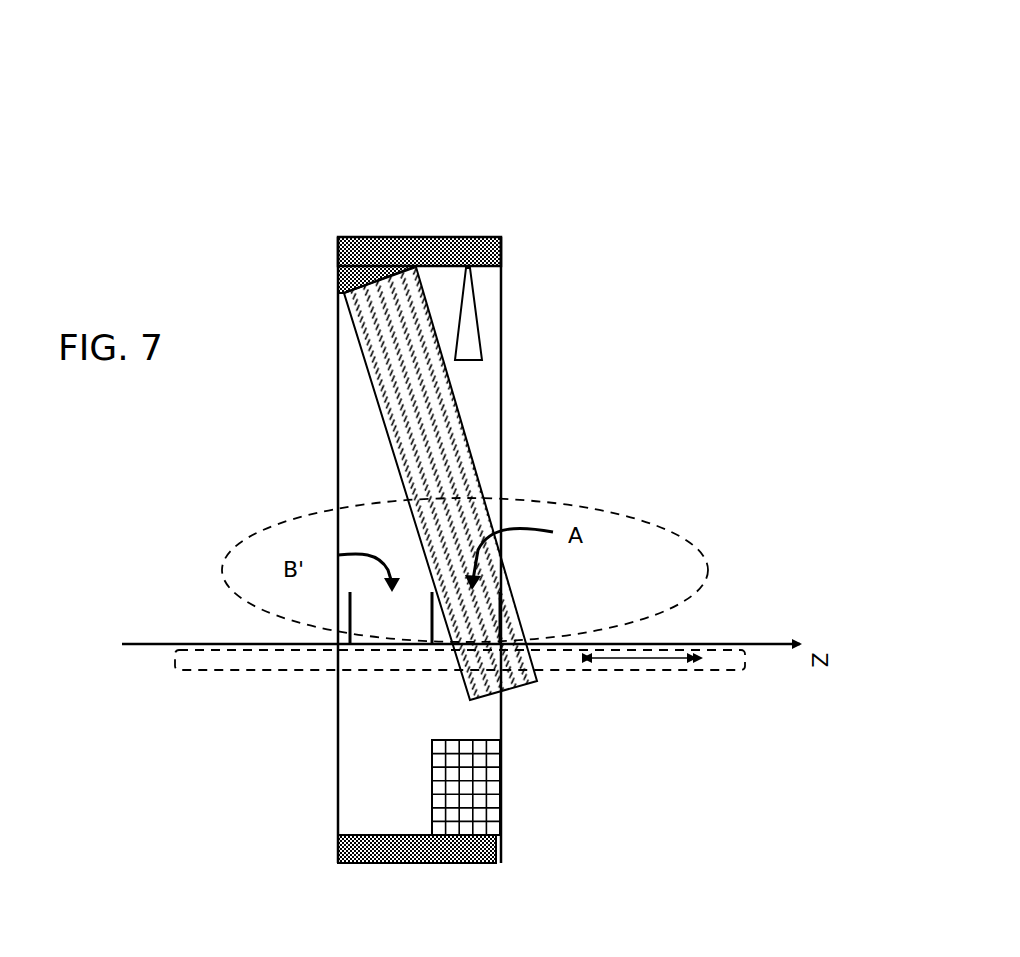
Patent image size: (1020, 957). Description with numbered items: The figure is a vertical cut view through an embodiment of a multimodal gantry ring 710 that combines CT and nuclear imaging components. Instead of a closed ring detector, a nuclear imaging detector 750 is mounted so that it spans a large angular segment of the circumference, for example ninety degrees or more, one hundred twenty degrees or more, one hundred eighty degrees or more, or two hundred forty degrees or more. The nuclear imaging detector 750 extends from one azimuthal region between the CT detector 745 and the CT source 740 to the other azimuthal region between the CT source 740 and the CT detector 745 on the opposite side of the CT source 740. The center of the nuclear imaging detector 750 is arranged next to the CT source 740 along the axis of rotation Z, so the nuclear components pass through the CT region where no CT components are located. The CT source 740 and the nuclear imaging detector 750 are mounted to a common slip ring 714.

The device 710 is at (176, 841).
The common slip ring 714 is at (378, 252).
The CT source 740 is at (473, 305).
The nuclear imaging detector 750 is at (465, 443).
The CT detector 745 is at (478, 795).